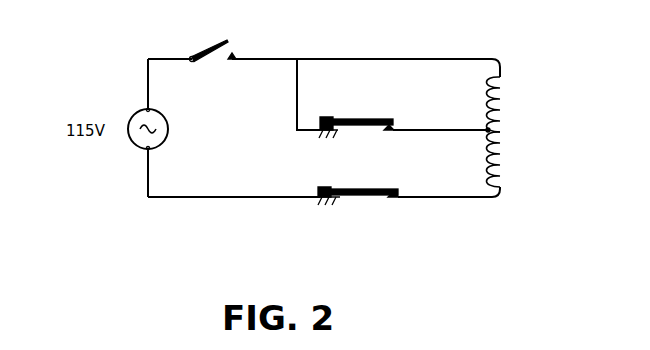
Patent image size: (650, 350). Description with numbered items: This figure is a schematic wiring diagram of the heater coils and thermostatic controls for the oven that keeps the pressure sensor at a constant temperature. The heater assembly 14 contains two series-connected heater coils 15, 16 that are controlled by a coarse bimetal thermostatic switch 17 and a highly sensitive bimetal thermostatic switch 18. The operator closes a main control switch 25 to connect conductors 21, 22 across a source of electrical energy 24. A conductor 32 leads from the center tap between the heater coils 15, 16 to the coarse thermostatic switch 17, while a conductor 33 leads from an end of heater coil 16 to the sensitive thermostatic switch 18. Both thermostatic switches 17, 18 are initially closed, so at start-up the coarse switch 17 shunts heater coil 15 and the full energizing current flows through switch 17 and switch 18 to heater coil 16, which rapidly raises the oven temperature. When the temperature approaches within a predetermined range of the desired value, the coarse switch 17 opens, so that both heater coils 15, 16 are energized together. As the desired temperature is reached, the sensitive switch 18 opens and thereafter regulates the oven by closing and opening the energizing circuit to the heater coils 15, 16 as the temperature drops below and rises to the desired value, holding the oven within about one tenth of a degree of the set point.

The heater assembly 14 is at (535, 109).
The heater coil 15 is at (510, 97).
The heater coil 16 is at (508, 165).
The coarse thermostatic switch 17 is at (350, 119).
The highly sensitive thermostatic switch 18 is at (345, 189).
The conductor 21 is at (262, 58).
The conductor 22 is at (240, 198).
The source of electrical energy 24 is at (136, 145).
The main control switch 25 is at (208, 49).
The conductor 32 is at (432, 129).
The conductor 33 is at (433, 198).